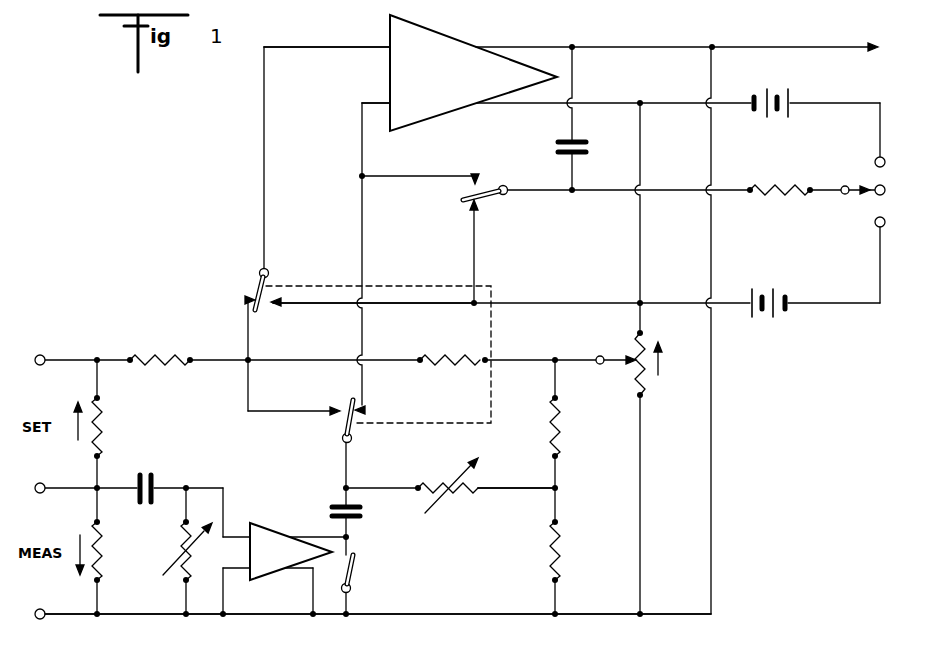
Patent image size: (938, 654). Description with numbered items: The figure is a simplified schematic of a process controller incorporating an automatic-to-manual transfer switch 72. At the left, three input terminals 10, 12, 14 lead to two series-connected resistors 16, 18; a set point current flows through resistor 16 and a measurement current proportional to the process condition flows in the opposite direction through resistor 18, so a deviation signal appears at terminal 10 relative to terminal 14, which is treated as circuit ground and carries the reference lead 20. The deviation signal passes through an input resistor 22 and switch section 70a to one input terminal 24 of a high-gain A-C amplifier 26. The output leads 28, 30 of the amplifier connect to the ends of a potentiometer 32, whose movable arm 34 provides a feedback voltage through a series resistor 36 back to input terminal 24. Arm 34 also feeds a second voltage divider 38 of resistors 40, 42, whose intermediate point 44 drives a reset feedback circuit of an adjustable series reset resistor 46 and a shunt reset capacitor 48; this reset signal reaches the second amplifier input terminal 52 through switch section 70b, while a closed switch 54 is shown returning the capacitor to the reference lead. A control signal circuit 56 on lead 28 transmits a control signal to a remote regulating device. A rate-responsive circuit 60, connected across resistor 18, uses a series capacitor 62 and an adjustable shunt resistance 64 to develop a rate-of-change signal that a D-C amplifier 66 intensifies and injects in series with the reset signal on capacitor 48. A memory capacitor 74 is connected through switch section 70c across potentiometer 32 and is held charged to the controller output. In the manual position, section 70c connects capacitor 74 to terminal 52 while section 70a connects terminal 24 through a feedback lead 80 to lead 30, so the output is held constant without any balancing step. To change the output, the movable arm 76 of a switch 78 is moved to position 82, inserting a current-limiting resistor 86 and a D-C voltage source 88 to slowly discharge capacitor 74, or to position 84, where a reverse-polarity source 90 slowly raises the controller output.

The input terminal 10 is at (43, 356).
The input terminal 12 is at (43, 484).
The input terminal 14 is at (62, 586).
The resistor 16 is at (100, 418).
The resistor 18 is at (100, 560).
The reference lead 20 is at (143, 615).
The input resistor 22 is at (160, 357).
The input terminal 24 is at (390, 46).
The high-gain A-C amplifier 26 is at (449, 86).
The output lead 28 is at (603, 47).
The output lead 30 is at (597, 103).
The potentiometer 32 is at (636, 338).
The movable arm 34 is at (604, 368).
The series resistor 36 is at (445, 357).
The second voltage divider 38 is at (590, 490).
The series resistor 40 is at (552, 412).
The series resistor 42 is at (552, 562).
The intermediate point 44 is at (550, 490).
The adjustable series reset resistor 46 is at (432, 480).
The shunt reset capacitor 48 is at (362, 511).
The second amplifier input terminal 52 is at (390, 103).
The switch 54 is at (357, 572).
The control signal circuit 56 is at (800, 47).
The rate-responsive circuit 60 is at (238, 473).
The series capacitor 62 is at (143, 504).
The adjustable shunt resistance 64 is at (196, 570).
The D-C amplifier 66 is at (284, 561).
The switch section 70a is at (258, 283).
The switch section 70b is at (347, 420).
The switch section 70c is at (488, 188).
The automatic-to-manual transfer switch 72 is at (492, 275).
The memory capacitor 74 is at (586, 144).
The movable arm 76 is at (853, 198).
The switch 78 is at (845, 172).
The feedback lead 80 is at (336, 304).
The switch position 82 is at (876, 160).
The switch position 84 is at (878, 228).
The current-limiting resistor 86 is at (772, 200).
The D-C voltage source 88 is at (772, 115).
The D-C voltage source 90 is at (773, 320).